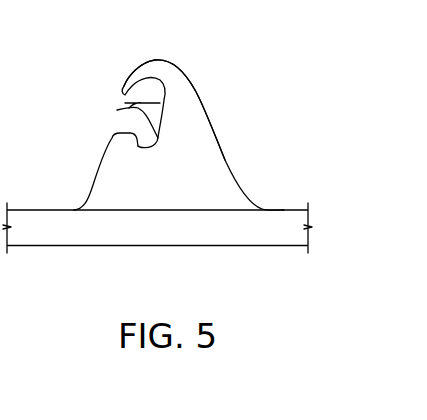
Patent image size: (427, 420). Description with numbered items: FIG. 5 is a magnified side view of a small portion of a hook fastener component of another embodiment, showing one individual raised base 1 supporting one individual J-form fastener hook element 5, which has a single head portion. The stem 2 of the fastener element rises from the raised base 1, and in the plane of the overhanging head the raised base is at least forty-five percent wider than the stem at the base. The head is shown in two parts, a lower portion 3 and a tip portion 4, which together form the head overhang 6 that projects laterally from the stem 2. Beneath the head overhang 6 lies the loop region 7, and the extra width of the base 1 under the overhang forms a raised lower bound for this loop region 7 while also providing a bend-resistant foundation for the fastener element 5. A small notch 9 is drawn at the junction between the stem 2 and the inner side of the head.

The base 1 is at (97, 238).
The stem 2 is at (80, 132).
The hook lower portion 3 is at (222, 92).
The hook tip portion 4 is at (207, 63).
The fastener hook element 5 is at (262, 62).
The head overhang 6 is at (125, 104).
The loop region 7 is at (125, 119).
The slot 9 is at (139, 148).